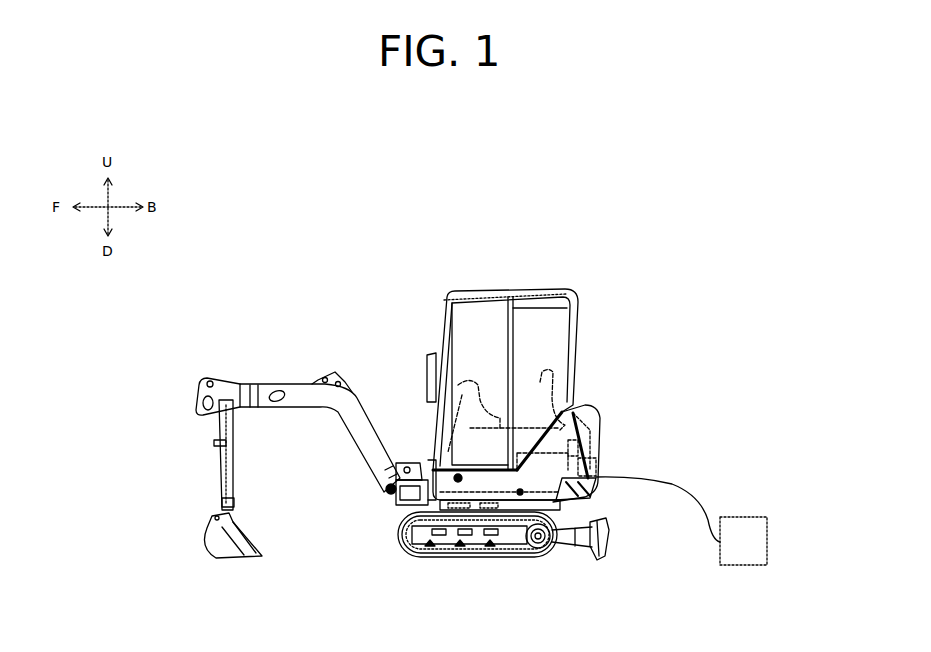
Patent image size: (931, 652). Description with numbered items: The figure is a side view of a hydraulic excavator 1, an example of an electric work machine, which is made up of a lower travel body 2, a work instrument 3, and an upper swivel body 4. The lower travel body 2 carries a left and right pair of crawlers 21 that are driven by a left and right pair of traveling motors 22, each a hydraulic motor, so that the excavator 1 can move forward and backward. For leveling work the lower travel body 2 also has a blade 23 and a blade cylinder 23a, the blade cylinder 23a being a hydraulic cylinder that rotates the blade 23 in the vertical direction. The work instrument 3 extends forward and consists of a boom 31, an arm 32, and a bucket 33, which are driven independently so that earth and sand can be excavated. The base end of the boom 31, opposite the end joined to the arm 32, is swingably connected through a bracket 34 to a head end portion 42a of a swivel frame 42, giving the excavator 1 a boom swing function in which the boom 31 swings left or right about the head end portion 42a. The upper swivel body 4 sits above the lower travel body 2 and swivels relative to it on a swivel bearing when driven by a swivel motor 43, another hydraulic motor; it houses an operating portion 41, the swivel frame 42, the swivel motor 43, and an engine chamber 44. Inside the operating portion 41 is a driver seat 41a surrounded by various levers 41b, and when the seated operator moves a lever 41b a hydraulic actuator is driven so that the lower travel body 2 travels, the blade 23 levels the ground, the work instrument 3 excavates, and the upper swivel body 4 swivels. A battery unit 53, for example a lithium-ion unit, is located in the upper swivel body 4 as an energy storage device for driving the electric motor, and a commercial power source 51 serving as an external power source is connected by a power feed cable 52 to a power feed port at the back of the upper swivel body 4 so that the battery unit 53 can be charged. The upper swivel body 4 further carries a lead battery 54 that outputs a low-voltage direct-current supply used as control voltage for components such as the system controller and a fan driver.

The hydraulic excavator 1 is at (270, 246).
The lower travel body 2 is at (388, 526).
The work instrument 3 is at (250, 370).
The upper swivel body 4 is at (607, 282).
The crawler 21 is at (528, 556).
The traveling motor 22 is at (546, 551).
The blade 23 is at (592, 556).
The blade cylinder 23a is at (562, 524).
The boom 31 is at (303, 418).
The arm 32 is at (230, 470).
The bucket 33 is at (206, 546).
The bracket 34 is at (406, 466).
The operating portion 41 is at (525, 280).
The driver seat 41a is at (575, 375).
The lever 41b is at (463, 376).
The swivel frame 42 is at (555, 508).
The head end portion 42a is at (428, 470).
The swivel motor 43 is at (458, 506).
The engine chamber 44 is at (583, 413).
The commercial power source 51 is at (775, 526).
The power feed cable 52 is at (677, 484).
The battery unit 53 is at (598, 467).
The lead battery 54 is at (600, 452).